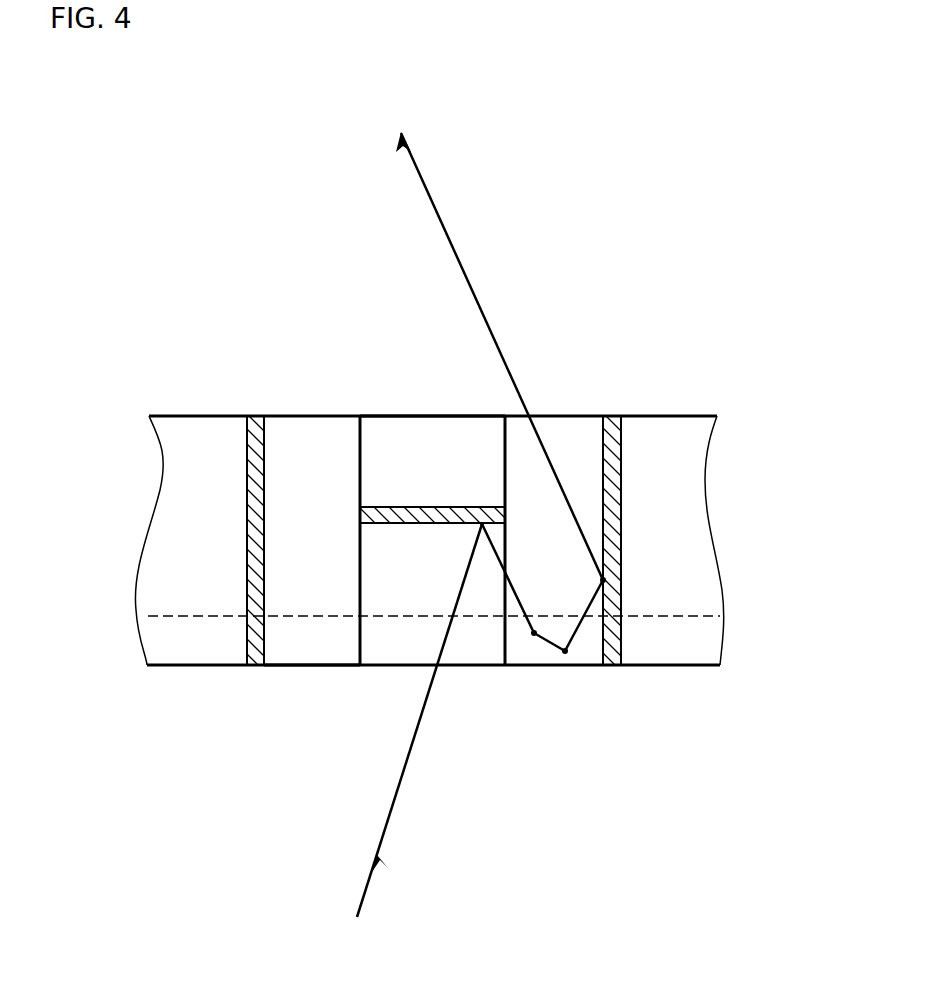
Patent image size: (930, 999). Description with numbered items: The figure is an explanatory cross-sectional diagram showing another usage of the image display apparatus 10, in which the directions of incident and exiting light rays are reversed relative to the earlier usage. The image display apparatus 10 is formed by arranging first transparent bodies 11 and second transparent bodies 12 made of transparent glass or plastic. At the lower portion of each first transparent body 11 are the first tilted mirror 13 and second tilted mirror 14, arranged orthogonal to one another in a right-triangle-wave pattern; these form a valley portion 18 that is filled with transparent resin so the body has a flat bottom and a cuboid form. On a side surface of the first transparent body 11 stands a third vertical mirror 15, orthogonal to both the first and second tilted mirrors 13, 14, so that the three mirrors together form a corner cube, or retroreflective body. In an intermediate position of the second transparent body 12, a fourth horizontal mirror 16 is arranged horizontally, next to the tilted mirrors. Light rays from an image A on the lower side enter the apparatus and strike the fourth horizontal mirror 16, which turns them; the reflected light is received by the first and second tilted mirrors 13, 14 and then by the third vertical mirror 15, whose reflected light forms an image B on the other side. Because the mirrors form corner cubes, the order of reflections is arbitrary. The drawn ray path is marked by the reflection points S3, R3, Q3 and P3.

The image display apparatus 10 is at (647, 264).
The first transparent body 11 is at (314, 408).
The second transparent body 12 is at (441, 408).
The first tilted mirror 13 is at (286, 650).
The second tilted mirror 14 is at (339, 640).
The third vertical mirror 15 is at (266, 477).
The fourth horizontal mirror 16 is at (417, 534).
The valley portion 18 is at (268, 636).
The image A is at (414, 739).
The image B is at (493, 340).
The reflection point P3 is at (604, 580).
The reflection point Q3 is at (568, 655).
The reflection point R3 is at (534, 636).
The reflection point S3 is at (482, 527).